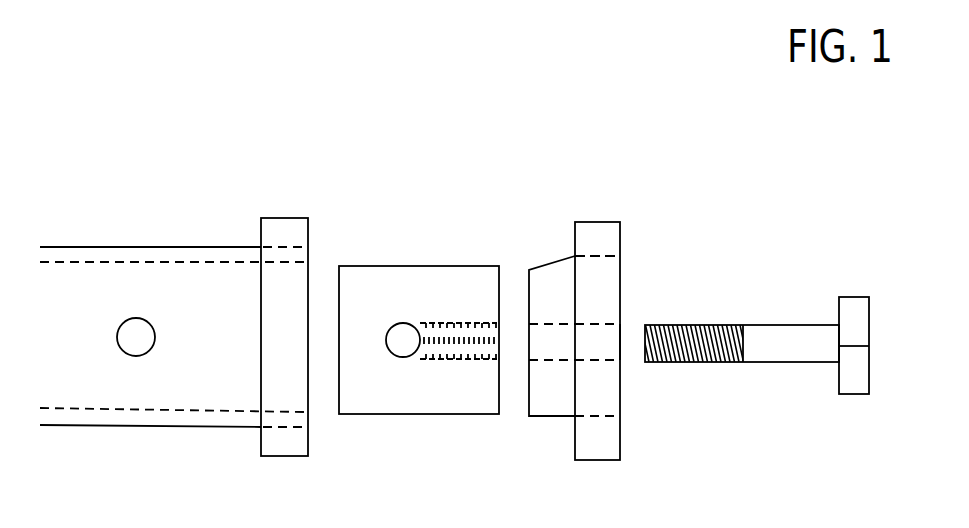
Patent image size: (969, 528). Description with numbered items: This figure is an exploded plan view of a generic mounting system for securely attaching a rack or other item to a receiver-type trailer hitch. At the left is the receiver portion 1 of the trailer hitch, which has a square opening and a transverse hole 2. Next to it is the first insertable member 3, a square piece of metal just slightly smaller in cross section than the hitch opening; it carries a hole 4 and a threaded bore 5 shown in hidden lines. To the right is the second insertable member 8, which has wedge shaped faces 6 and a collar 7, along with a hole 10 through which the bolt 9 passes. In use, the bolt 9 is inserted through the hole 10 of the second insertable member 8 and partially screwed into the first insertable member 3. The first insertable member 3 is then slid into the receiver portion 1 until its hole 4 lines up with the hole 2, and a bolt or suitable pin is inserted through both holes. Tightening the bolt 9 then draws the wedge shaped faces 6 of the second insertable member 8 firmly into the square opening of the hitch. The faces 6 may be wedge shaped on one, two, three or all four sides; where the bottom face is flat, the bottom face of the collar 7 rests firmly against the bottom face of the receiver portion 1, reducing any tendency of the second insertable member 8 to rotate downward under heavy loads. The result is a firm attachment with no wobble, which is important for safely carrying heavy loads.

The receiver portion of trailer hitch 1 is at (282, 217).
The hole 2 is at (136, 316).
The first insertable member 3 is at (402, 265).
The hole 4 is at (401, 358).
The threaded bore 5 is at (452, 364).
The wedge shaped faces 6 is at (535, 262).
The collar 7 is at (596, 220).
The second insertable member 8 is at (621, 265).
The bolt 9 is at (773, 322).
The hole 10 is at (625, 349).